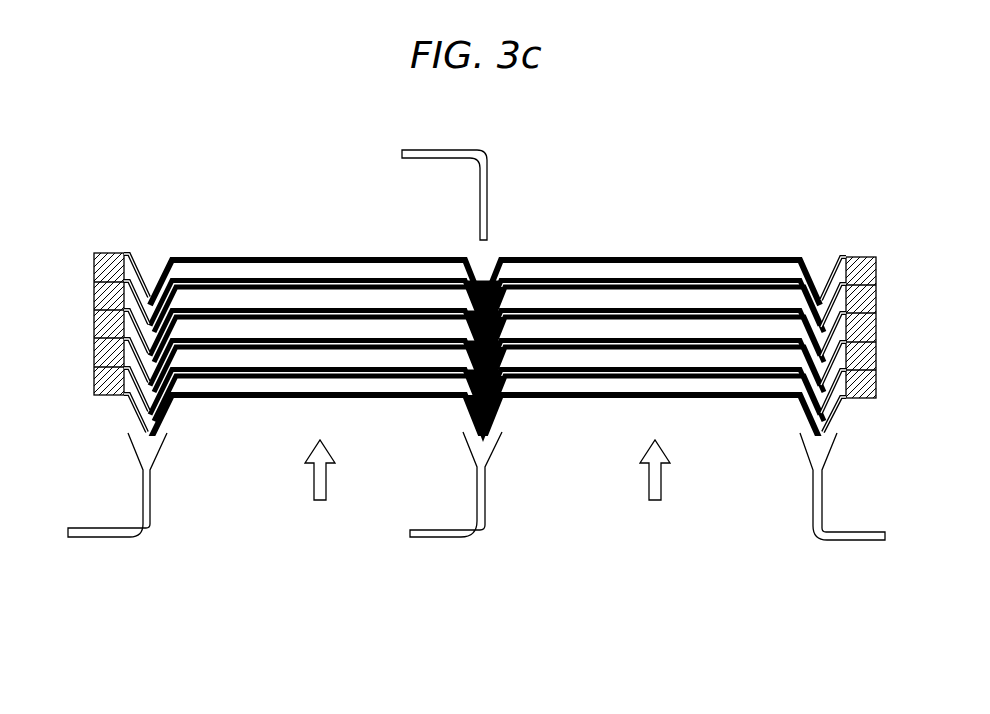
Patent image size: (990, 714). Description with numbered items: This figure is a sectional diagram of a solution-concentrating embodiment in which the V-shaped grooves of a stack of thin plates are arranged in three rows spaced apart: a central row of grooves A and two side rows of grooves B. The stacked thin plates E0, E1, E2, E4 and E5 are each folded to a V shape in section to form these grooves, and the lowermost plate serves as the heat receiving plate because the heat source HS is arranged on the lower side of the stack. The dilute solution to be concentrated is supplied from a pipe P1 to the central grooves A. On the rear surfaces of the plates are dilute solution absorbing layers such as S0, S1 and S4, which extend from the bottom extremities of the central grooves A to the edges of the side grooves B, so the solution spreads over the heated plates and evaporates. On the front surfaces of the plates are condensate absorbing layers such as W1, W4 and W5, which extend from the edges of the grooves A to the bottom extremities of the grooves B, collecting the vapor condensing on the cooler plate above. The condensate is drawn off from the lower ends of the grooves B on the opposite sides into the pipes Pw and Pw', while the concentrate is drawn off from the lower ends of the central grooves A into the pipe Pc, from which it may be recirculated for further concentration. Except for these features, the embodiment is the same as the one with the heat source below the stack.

The grooves for the resulting concentrate B is at (150, 270).
The dilute solution absorbing layer S4 is at (232, 279).
The condensate absorbing layer W4 is at (317, 285).
The pipe P1 is at (490, 182).
The central grooves for the dilute solution A is at (490, 266).
The thin plate E5 is at (612, 257).
The condensate absorbing layer W5 is at (681, 266).
The thin plate E4 is at (848, 284).
The thin plate E2 is at (848, 338).
The thin plate E1 is at (848, 370).
The condensate absorbing layer W1 is at (234, 380).
The dilute solution absorbing layer S1 is at (288, 360).
The heat source HS is at (485, 489).
The thin plate E0 is at (562, 398).
The dilute solution absorbing layer S0 is at (619, 387).
The pipe Pw is at (117, 532).
The pipe Pc is at (448, 538).
The pipe Pw' is at (842, 532).